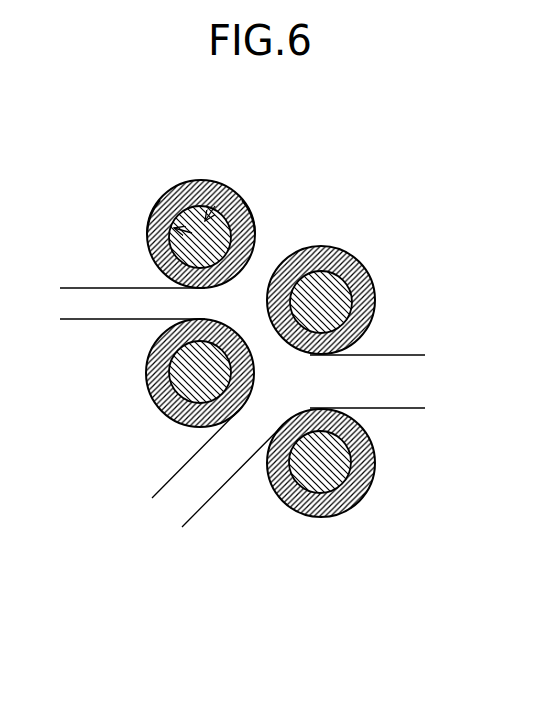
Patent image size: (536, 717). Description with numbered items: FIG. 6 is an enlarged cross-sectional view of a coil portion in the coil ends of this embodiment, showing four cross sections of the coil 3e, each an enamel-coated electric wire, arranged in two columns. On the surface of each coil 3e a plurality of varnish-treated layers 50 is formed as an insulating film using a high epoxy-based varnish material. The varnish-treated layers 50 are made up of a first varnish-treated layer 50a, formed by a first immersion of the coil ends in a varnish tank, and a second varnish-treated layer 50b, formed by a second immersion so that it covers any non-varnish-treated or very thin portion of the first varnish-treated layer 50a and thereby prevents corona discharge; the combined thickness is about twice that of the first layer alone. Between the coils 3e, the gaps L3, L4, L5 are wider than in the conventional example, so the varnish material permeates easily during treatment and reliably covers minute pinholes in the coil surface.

The varnish-treated layers 50 is at (200, 180).
The coil 3e is at (232, 215).
The first varnish-treated layer 50a is at (148, 245).
The second varnish-treated layer 50b is at (255, 210).
The gap L3 is at (85, 243).
The gap L4 is at (137, 448).
The gap L5 is at (403, 310).